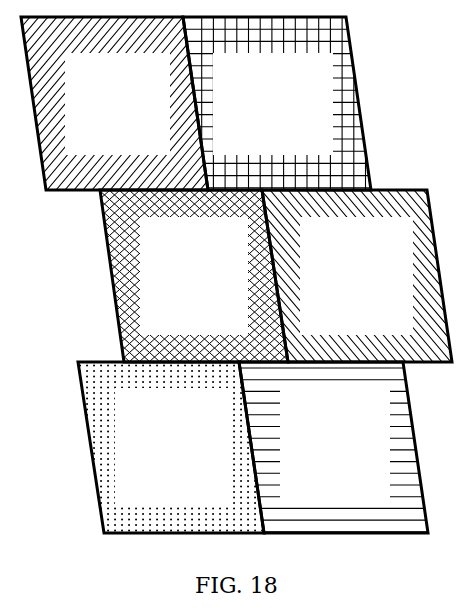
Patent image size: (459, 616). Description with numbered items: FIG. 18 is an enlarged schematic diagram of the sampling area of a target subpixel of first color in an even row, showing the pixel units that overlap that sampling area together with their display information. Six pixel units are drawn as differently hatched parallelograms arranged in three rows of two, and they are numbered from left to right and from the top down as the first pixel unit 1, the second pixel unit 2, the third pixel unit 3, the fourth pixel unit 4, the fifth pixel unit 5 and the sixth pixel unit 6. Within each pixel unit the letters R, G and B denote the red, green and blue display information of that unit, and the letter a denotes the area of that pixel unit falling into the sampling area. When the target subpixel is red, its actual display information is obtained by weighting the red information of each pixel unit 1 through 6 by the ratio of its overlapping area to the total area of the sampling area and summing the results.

The first pixel unit 1 is at (172, 103).
The second pixel unit 2 is at (277, 238).
The third pixel unit 3 is at (229, 276).
The fourth pixel unit 4 is at (288, 276).
The fifth pixel unit 5 is at (171, 447).
The sixth pixel unit 6 is at (333, 447).